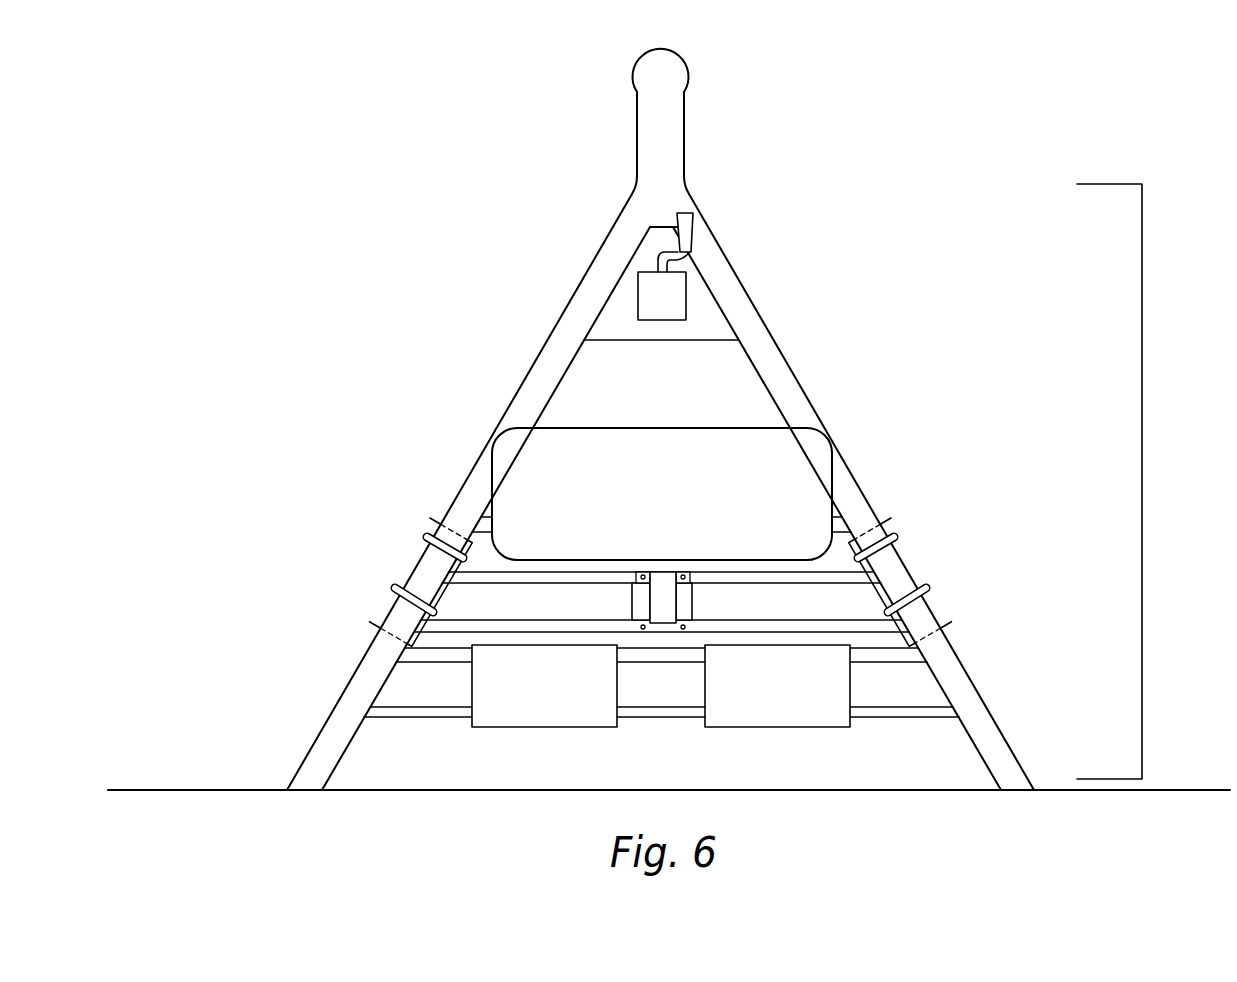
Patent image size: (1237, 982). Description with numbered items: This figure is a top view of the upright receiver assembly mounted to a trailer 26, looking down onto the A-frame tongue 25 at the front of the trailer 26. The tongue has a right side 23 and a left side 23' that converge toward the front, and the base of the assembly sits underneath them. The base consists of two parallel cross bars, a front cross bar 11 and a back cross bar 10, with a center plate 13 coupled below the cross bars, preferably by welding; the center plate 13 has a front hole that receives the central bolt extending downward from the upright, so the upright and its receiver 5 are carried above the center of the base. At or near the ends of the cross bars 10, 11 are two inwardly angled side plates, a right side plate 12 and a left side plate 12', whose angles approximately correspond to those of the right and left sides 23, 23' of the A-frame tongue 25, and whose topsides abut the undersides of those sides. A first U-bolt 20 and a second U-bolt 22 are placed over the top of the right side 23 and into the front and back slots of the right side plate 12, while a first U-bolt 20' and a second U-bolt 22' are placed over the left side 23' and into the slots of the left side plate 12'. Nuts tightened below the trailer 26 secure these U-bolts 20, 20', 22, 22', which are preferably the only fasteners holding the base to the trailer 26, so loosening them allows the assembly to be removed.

The receiver 5 is at (668, 603).
The back cross bar 10 is at (870, 633).
The front cross bar 11 is at (830, 570).
The right side plate 12 is at (927, 580).
The left side plate 12' is at (407, 582).
The center plate 13 is at (632, 600).
The first U-bolt 20 is at (914, 520).
The first U-bolt 20' is at (417, 530).
The second U-bolt 22 is at (956, 593).
The second U-bolt 22' is at (376, 598).
The right side of the A-frame tongue 23 is at (842, 492).
The left side of the A-frame tongue 23' is at (468, 492).
The A-frame tongue 25 is at (1142, 482).
The trailer 26 is at (680, 203).